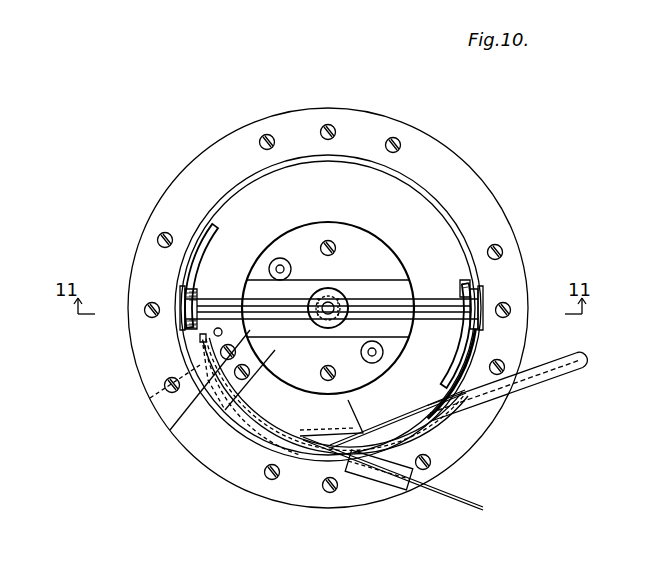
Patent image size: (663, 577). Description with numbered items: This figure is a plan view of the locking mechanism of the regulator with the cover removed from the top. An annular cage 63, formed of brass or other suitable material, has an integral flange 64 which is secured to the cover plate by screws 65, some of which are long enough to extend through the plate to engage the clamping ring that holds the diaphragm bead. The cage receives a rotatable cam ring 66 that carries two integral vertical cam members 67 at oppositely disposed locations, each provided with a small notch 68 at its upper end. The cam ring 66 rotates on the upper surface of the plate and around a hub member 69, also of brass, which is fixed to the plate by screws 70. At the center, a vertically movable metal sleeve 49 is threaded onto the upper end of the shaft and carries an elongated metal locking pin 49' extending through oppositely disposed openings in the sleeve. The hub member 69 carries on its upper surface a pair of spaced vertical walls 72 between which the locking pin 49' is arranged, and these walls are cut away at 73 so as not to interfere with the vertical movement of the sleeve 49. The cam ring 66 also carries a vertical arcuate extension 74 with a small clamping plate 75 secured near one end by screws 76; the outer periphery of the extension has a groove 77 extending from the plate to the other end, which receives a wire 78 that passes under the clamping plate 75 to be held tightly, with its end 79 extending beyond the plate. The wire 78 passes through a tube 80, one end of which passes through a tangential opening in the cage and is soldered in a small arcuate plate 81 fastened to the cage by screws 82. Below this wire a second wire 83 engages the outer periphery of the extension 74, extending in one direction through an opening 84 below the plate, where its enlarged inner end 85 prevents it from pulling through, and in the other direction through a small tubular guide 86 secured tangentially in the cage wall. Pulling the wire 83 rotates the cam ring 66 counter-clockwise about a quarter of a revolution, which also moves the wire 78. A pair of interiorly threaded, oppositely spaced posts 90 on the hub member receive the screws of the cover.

The annular cage 63 is at (420, 186).
The flange 64 is at (488, 200).
The screws 65 is at (267, 134).
The cam ring 66 is at (437, 219).
The cam members 67 is at (216, 240).
The notches 68 is at (183, 300).
The hub member 69 is at (369, 240).
The screws 70 is at (330, 241).
The walls 72 is at (388, 285).
The cut away 73 is at (320, 296).
The arcuate extension 74 is at (230, 430).
The clamping plate 75 is at (172, 428).
The screws 76 is at (248, 368).
The groove 77 is at (350, 405).
The wire 78 is at (390, 425).
The end 79 is at (214, 336).
The tube 80 is at (530, 380).
The arcuate plate 81 is at (450, 414).
The screws 82 is at (505, 360).
The second wire 83 is at (270, 405).
The opening 84 is at (175, 387).
The enlarged inner end 85 is at (195, 340).
The tubular guide 86 is at (382, 490).
The posts 90 is at (280, 258).
The sleeve 49 is at (331, 292).
The locking pin 49' is at (447, 285).